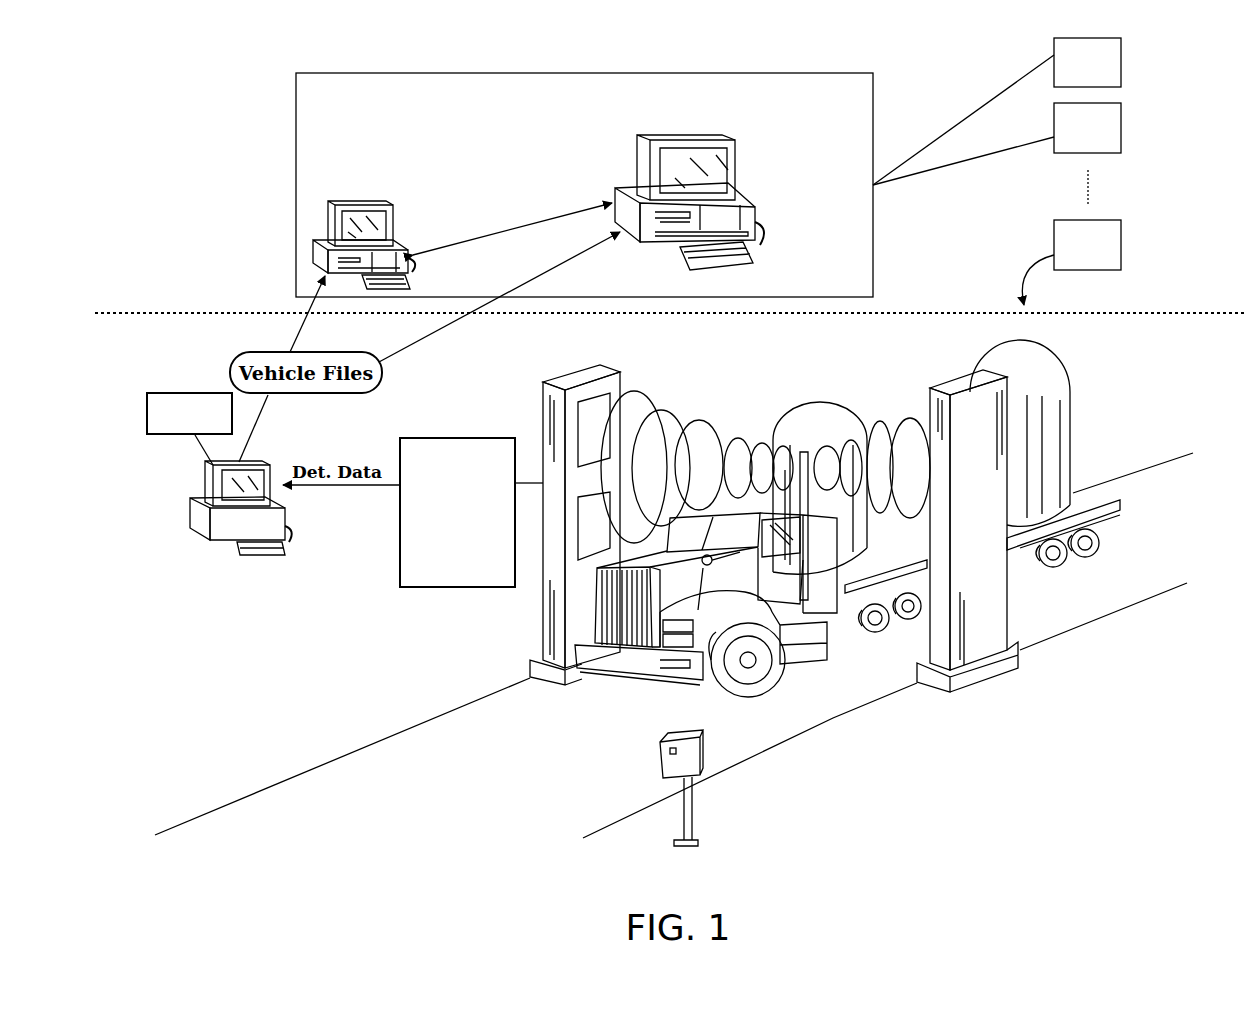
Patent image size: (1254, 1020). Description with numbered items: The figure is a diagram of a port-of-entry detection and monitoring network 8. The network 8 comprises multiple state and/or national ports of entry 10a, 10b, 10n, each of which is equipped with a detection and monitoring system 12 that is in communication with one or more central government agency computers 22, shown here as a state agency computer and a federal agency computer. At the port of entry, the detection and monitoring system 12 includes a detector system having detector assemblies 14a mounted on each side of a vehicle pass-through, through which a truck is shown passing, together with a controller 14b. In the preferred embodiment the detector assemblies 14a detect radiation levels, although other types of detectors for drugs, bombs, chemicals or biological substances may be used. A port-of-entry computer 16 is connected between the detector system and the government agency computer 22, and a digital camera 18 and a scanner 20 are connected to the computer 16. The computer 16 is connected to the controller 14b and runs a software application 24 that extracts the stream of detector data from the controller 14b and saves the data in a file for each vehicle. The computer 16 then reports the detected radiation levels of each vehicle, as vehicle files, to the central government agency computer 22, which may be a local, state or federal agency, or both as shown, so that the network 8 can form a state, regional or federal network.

The port-of-entry detection and monitoring network 8 is at (155, 65).
The central government agency computer 22 is at (507, 100).
The port of entry 10a is at (997, 111).
The port of entry 10b is at (997, 144).
The port of entry 10n is at (1071, 262).
The scanner 20 is at (196, 390).
The software application 24 is at (210, 521).
The computer 16 is at (202, 570).
The detector assembly 14a is at (580, 378).
The controller 14b is at (957, 388).
The detection and monitoring system 12 is at (897, 439).
The digital camera 18 is at (660, 772).